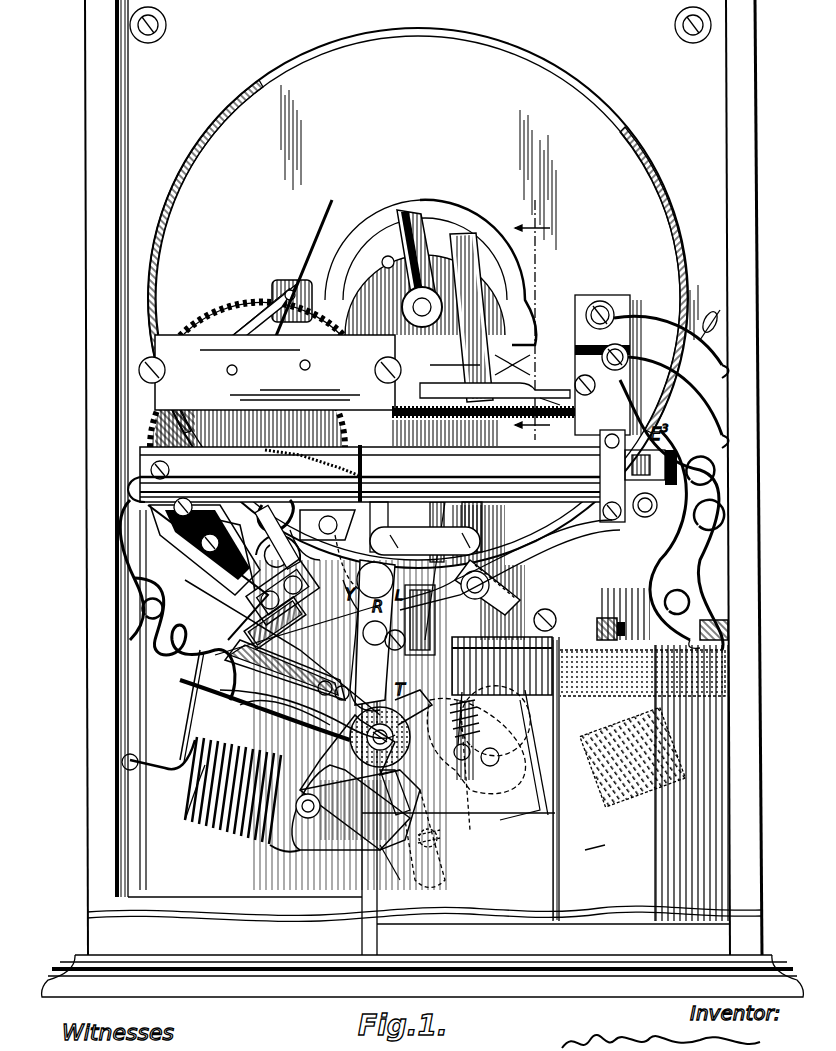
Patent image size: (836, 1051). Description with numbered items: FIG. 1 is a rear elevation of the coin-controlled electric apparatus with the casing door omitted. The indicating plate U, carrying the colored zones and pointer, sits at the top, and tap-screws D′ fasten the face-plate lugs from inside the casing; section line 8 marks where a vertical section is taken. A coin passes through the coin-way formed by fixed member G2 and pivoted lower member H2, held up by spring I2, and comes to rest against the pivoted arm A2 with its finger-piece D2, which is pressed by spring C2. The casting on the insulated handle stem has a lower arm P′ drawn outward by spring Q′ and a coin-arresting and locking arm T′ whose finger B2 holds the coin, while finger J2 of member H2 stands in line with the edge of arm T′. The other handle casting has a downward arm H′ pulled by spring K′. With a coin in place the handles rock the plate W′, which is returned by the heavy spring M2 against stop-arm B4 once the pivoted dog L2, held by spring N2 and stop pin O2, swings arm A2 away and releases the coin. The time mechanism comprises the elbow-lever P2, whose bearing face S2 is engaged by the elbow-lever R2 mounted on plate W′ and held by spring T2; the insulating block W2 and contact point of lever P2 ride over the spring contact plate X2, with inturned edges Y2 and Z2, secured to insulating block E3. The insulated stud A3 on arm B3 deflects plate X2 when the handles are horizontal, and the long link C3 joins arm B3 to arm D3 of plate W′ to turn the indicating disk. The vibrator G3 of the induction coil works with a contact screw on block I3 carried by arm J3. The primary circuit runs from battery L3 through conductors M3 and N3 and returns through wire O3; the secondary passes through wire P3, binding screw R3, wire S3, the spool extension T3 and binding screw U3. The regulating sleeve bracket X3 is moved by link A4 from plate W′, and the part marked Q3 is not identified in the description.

The rotary indicating plate U is at (418, 298).
The tap-screws D′ is at (158, 40).
The section line 8 is at (532, 318).
The insulated stud A3 is at (520, 300).
The arm B3 is at (475, 330).
The lower edge of spring plate Z2 is at (340, 300).
The fixed member of coin-way G2 is at (248, 449).
The insulating block W2 is at (305, 360).
The pivoted elbow-lever P2 is at (270, 391).
The spring contact plate X2 is at (495, 376).
The insulating block E3 is at (550, 385).
The conductor N3 is at (575, 285).
The wire O3 is at (713, 320).
The binding-screw U3 is at (671, 483).
The conductor M3 is at (672, 535).
The spring N2 is at (366, 474).
The cylindrical extension of coil spool T3 is at (312, 463).
The bearing face S2 is at (375, 473).
The bracket plate of sleeve X3 is at (426, 503).
The upper edge of spring plate Y2 is at (478, 543).
The vibrator G3 is at (616, 476).
The pivoted lower member of coin-way H2 is at (175, 580).
The spring I2 is at (130, 540).
The wire S3 is at (135, 590).
The stop pin O2 is at (277, 534).
The pivoted dog L2 is at (322, 531).
The pivoted arm A2 is at (260, 590).
The finger-piece D2 is at (282, 623).
The link A4 is at (407, 558).
The stop-arm B4 is at (500, 575).
The arm of casting J3 is at (519, 586).
The insulated block I3 is at (510, 565).
The plate W′ is at (356, 635).
The coin-arresting and locking arm T′ is at (297, 652).
The spring T2 is at (427, 620).
The wire P3 is at (388, 649).
The heavy spring M2 is at (597, 628).
The battery L3 is at (708, 617).
The long link C3 is at (550, 735).
The spring K′ is at (530, 784).
The elbow-lever R2 is at (450, 726).
The arm of plate D3 is at (487, 758).
The binding-screw R3 is at (430, 738).
The finger B2 is at (287, 710).
The lower arm P′ is at (340, 830).
The spring Q′ is at (215, 830).
The finger J2 is at (175, 706).
The spring C2 is at (300, 645).
The catch Q3 is at (400, 792).
The downwardly-extending arm H′ is at (453, 839).